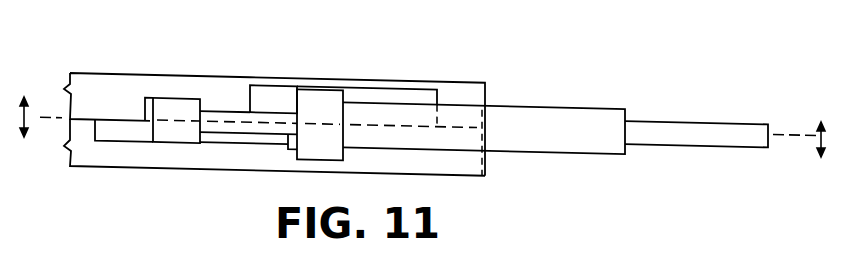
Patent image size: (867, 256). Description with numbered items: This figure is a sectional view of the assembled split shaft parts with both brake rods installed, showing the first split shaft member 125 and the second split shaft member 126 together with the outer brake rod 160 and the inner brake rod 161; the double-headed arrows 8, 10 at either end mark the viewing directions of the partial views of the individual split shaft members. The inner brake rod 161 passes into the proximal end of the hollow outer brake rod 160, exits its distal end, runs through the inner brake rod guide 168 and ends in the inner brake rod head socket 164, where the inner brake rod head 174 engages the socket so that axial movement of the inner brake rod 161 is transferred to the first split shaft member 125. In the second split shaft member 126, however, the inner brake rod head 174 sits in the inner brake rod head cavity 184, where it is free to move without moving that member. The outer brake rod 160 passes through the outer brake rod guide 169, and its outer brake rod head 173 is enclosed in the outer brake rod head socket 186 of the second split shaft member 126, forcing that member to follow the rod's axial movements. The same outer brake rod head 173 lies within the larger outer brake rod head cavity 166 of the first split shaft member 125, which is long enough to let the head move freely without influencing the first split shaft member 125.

The viewing direction arrow 8 is at (423, 115).
The viewing direction arrow 10 is at (420, 157).
The first split shaft member 125 is at (116, 88).
The second split shaft member 126 is at (82, 153).
The outer brake rod 160 is at (562, 118).
The inner brake rod 161 is at (240, 112).
The inner brake rod head socket 164 is at (148, 95).
The outer brake rod head cavity 166 is at (373, 98).
The inner brake rod guide 168 is at (216, 111).
The outer brake rod guide 169 is at (465, 150).
The outer brake rod head 173 is at (347, 135).
The inner brake rod head 174 is at (177, 133).
The inner brake rod head cavity 184 is at (127, 132).
The outer brake rod head socket 186 is at (293, 153).